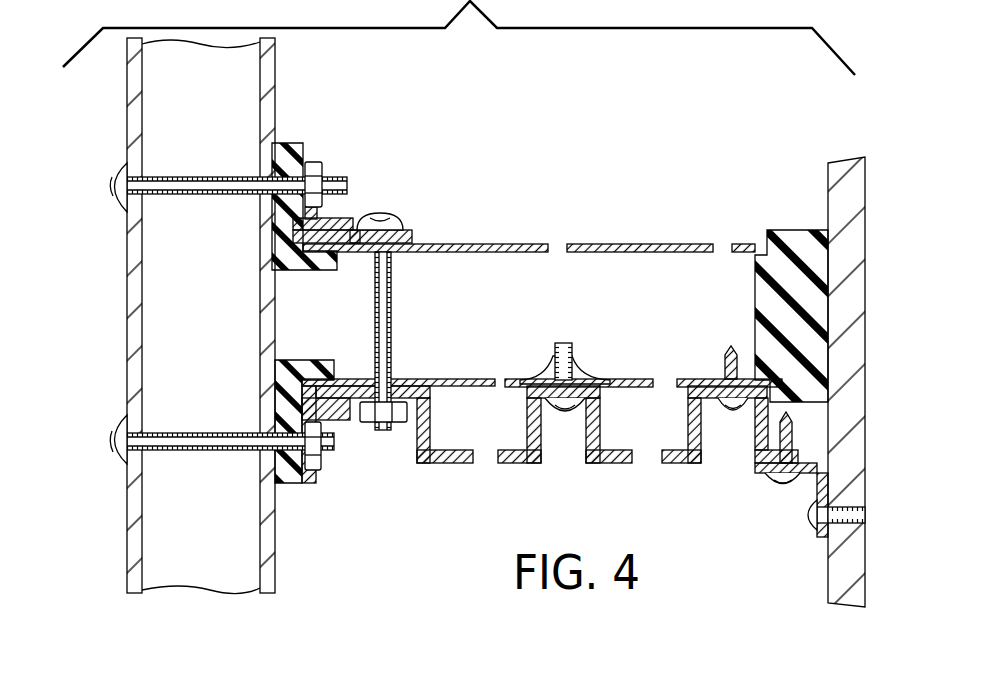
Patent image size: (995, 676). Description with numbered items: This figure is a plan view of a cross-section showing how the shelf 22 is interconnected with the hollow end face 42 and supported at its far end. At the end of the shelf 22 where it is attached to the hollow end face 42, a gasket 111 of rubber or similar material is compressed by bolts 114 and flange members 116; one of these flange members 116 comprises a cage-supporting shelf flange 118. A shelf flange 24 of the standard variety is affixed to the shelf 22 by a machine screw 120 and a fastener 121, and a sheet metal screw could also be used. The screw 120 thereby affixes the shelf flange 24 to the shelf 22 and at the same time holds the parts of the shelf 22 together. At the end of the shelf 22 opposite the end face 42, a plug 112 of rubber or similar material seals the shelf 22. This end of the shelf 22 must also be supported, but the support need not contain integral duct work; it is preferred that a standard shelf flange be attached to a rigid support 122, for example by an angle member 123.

The shelf 22 is at (520, 243).
The shelf flange 24 is at (525, 464).
The hollow end face 42 is at (277, 556).
The gasket 111 is at (282, 143).
The plug 112 is at (805, 230).
The bolts 114 is at (112, 182).
The flange members 116 is at (352, 217).
The cage-supporting shelf flange 118 is at (430, 464).
The machine screw 120 is at (565, 342).
The fastener 121 is at (528, 378).
The rigid support 122 is at (858, 410).
The angle member 123 is at (757, 475).